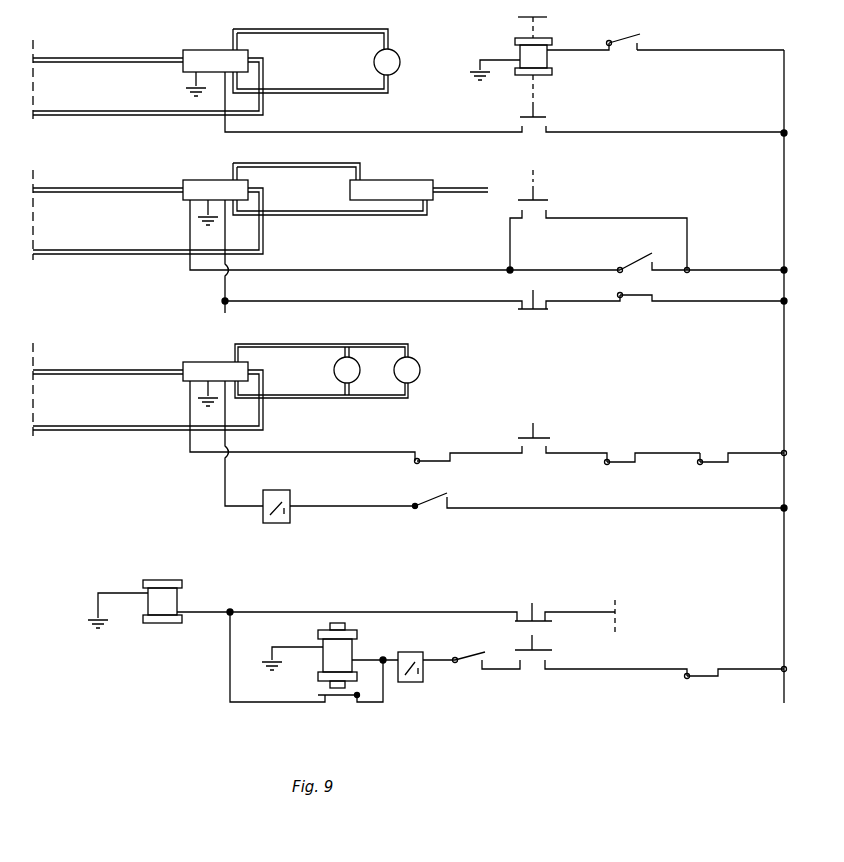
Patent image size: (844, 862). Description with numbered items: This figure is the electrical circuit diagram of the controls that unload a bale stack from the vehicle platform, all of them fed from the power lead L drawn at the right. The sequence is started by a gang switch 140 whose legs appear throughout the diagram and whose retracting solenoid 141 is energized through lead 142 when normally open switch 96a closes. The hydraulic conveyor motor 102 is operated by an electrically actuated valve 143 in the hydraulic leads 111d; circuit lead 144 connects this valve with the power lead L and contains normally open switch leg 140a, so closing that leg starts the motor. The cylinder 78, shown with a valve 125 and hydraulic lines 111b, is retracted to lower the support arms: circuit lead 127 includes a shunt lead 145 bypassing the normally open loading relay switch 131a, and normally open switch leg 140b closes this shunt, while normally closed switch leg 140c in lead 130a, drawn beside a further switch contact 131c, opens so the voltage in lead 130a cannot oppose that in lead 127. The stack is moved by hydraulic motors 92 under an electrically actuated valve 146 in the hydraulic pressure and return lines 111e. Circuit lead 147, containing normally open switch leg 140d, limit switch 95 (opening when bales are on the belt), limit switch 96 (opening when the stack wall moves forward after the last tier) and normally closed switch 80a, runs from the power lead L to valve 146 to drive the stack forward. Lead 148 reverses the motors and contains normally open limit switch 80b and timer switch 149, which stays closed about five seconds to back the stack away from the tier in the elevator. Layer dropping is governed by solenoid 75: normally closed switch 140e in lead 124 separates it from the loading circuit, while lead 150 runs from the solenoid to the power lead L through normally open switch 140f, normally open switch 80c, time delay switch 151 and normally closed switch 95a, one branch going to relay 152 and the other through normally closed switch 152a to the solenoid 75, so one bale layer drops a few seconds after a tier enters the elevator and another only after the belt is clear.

The power lead L is at (783, 555).
The hydraulic leads 111d is at (158, 62).
The hydraulic conveyor motor 102 is at (388, 55).
The electrically actuated valve 143 is at (200, 50).
The circuit lead 144 is at (387, 131).
The gang switch 140 is at (523, 16).
The retracting solenoid 141 is at (528, 52).
The normally open switch 96a is at (618, 35).
The circuit lead 142 is at (684, 52).
The normally open switch leg 140a is at (543, 118).
The cable 111b is at (147, 193).
The cylinder 78 is at (390, 185).
The control unit 125 is at (210, 182).
The circuit lead 127 is at (287, 269).
The shunt lead 145 is at (612, 218).
The normally open switch leg 140b is at (545, 202).
The normally open relay switch 131a is at (628, 253).
The circuit lead 130a is at (353, 301).
The switch contact 131c is at (630, 290).
The normally closed switch leg 140c is at (530, 313).
The hydraulic pressure and return lines 111e is at (137, 372).
The hydraulic motors 92 is at (397, 368).
The electrically actuated valve 146 is at (203, 363).
The circuit lead 147 is at (287, 452).
The normally closed switch 80a is at (413, 463).
The normally open switch leg 140d is at (528, 435).
The limit switch 96 is at (605, 465).
The limit switch 95 is at (703, 452).
The timer switch 149 is at (275, 487).
The circuit lead 148 is at (347, 505).
The normally open limit switch 80b is at (428, 510).
The solenoid 75 is at (173, 600).
The lead 124 is at (273, 611).
The normally closed switch 140e is at (523, 603).
The lead 150 is at (227, 672).
The relay 152 is at (325, 640).
The normally closed switch 152a is at (343, 703).
The time delay switch 151 is at (412, 683).
The normally open switch 80c is at (472, 668).
The normally open switch 140f is at (540, 650).
The normally closed switch 95a is at (705, 669).